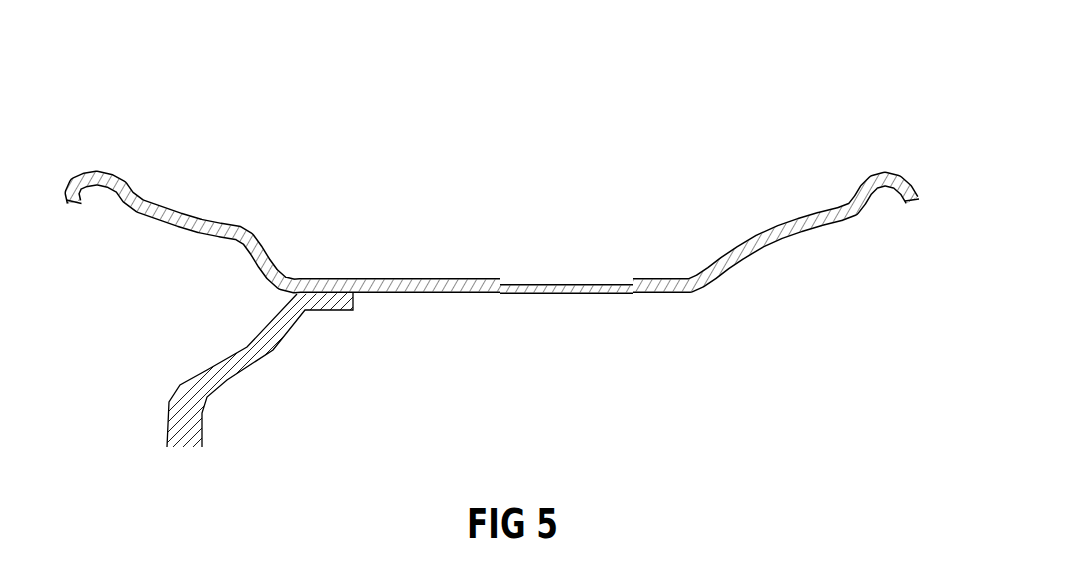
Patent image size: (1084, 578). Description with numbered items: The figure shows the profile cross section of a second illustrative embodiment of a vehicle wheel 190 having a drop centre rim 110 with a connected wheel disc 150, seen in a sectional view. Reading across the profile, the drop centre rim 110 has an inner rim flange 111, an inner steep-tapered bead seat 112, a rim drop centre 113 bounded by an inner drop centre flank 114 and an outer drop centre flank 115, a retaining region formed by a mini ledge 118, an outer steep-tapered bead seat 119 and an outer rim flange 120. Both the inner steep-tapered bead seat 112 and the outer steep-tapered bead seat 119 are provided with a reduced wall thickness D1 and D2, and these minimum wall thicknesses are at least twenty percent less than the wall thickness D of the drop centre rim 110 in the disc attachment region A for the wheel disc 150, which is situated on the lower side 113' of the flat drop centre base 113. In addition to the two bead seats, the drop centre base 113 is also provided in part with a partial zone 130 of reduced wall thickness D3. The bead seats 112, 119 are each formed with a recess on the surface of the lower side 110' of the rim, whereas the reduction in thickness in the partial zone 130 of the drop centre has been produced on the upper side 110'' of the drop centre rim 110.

The drop centre rim 110 is at (493, 171).
The lower side 110' is at (515, 348).
The upper side 110'' is at (500, 220).
The inner rim flange 111 is at (895, 160).
The inner steep-tapered bead seat 112 is at (837, 165).
The rim drop centre 113 is at (400, 351).
The lower side of the drop centre base 113' is at (566, 356).
The inner drop centre flank 114 is at (757, 268).
The outer drop centre flank 115 is at (250, 287).
The mini ledge 118 is at (263, 218).
The outer steep-tapered bead seat 119 is at (168, 195).
The outer rim flange 120 is at (92, 155).
The partial zone of reduced wall thickness 130 is at (627, 245).
The wheel disc 150 is at (183, 417).
The vehicle wheel 190 is at (732, 438).
The disc attachment region A is at (363, 250).
The wall thickness D is at (332, 340).
The reduced wall thickness of inner bead seat D1 is at (808, 283).
The reduced wall thickness of outer bead seat D2 is at (183, 273).
The reduced wall thickness of drop centre partial zone D3 is at (573, 355).